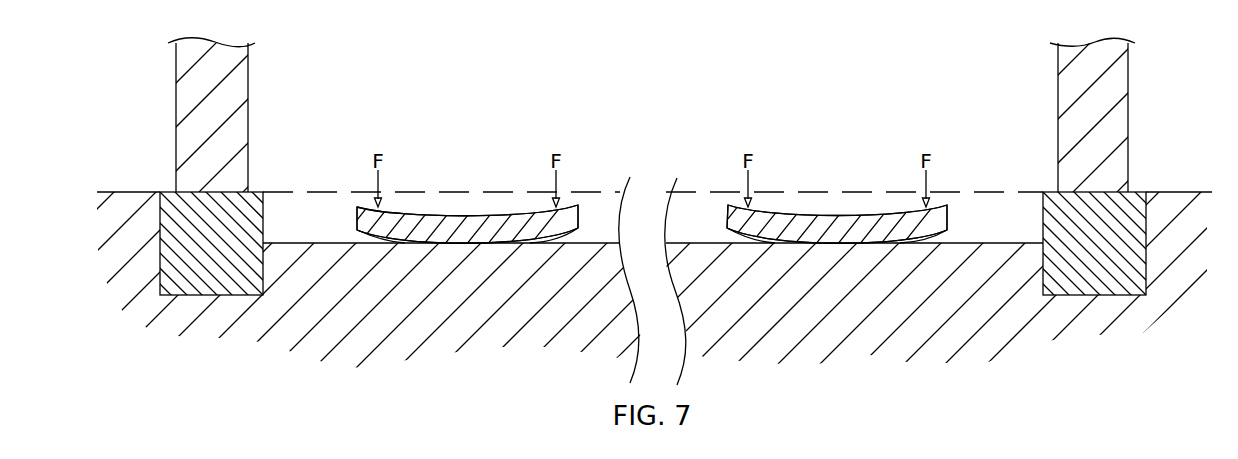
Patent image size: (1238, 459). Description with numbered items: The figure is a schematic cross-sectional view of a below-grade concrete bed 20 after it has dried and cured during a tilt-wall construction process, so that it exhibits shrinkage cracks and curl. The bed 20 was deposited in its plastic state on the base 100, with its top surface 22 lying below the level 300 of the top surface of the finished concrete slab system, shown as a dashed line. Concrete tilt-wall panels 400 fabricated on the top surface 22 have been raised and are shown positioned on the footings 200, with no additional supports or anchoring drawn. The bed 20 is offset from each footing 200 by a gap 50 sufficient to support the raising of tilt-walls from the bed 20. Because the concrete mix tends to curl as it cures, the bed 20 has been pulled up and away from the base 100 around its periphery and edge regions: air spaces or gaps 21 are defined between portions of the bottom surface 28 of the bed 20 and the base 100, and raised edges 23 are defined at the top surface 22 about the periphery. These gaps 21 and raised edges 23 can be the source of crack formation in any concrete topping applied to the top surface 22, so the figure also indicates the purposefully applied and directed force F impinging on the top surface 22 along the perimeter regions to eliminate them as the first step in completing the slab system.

The bed 20 is at (523, 218).
The gaps 21 is at (363, 241).
The top surface 22 is at (468, 217).
The raised edges 23 is at (358, 206).
The bottom surface 28 is at (405, 243).
The gap 50 is at (303, 223).
The base 100 is at (603, 243).
The footings 200 is at (168, 227).
The level 300 is at (408, 192).
The concrete tilt-wall panels 400 is at (187, 100).